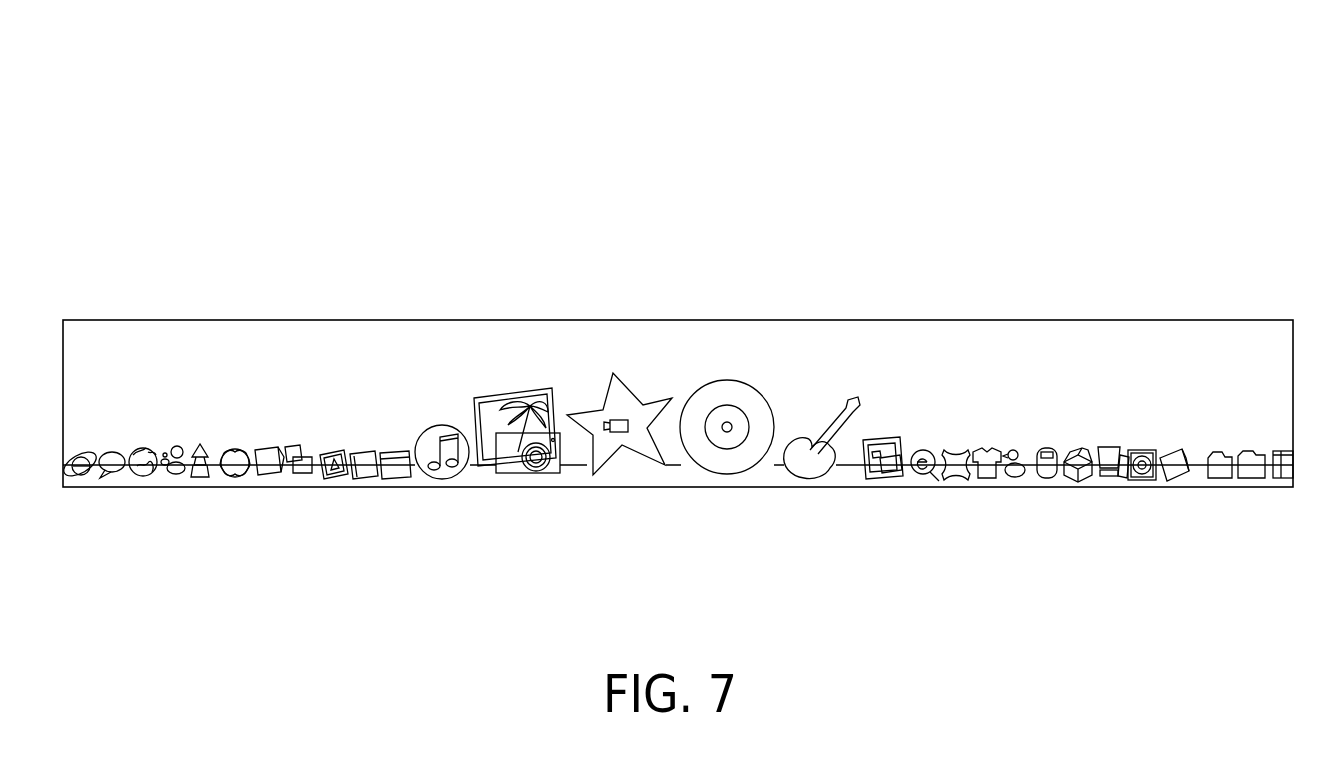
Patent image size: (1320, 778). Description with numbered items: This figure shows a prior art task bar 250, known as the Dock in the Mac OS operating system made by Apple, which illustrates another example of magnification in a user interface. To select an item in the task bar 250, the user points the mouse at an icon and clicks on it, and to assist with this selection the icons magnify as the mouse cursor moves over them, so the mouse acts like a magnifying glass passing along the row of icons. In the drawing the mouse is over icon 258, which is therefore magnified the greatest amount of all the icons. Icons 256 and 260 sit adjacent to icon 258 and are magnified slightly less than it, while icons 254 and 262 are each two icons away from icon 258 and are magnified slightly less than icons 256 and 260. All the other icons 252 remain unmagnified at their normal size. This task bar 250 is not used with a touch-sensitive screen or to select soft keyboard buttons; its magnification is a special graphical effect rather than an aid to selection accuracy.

The task bar 250 is at (1161, 119).
The icons 252 is at (143, 478).
The icon 254 is at (445, 479).
The icon 256 is at (523, 473).
The icon 258 is at (620, 446).
The icon 260 is at (735, 471).
The icon 262 is at (808, 471).